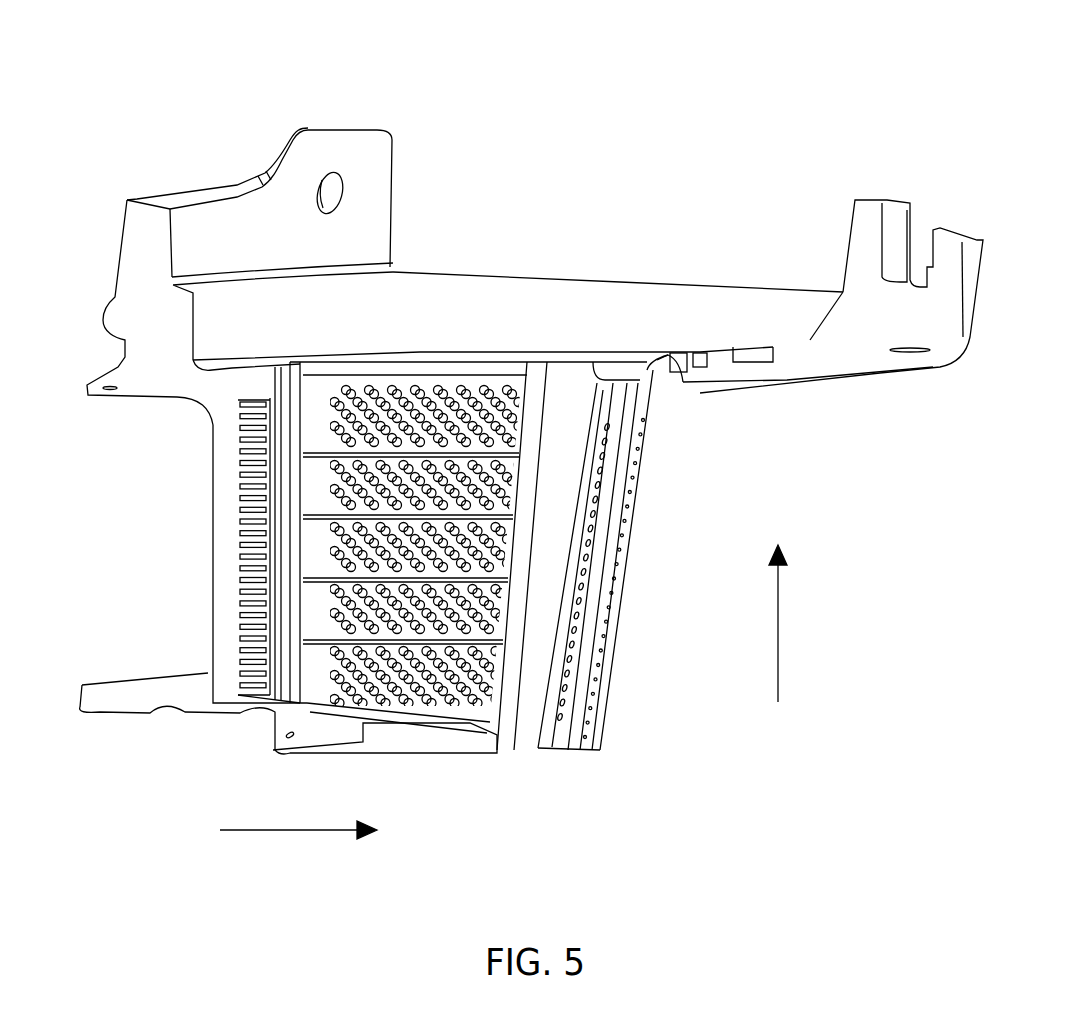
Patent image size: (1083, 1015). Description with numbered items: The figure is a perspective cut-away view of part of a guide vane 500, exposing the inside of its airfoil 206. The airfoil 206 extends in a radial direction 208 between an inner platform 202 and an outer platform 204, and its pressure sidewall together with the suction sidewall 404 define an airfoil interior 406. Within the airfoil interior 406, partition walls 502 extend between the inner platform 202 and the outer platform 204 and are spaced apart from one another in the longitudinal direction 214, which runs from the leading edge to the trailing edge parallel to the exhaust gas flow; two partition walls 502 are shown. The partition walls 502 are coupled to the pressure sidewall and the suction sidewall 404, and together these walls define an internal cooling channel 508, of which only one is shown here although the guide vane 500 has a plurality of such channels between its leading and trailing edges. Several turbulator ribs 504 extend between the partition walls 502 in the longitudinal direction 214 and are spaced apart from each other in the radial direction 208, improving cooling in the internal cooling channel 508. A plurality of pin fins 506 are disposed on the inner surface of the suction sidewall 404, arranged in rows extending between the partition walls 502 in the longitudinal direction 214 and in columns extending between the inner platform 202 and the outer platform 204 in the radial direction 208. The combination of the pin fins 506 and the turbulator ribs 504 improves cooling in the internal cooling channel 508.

The guide vane 500 is at (793, 80).
The outer platform 204 is at (113, 355).
The suction sidewall 404 is at (471, 355).
The airfoil interior 406 is at (310, 428).
The partition walls 502 is at (300, 519).
The turbulator rib 504 is at (320, 567).
The pin fins 506 is at (432, 388).
The airfoil 206 is at (588, 590).
The radial direction 208 is at (778, 631).
The inner platform 202 is at (78, 720).
The internal cooling channel 508 is at (432, 702).
The longitudinal direction 214 is at (288, 830).